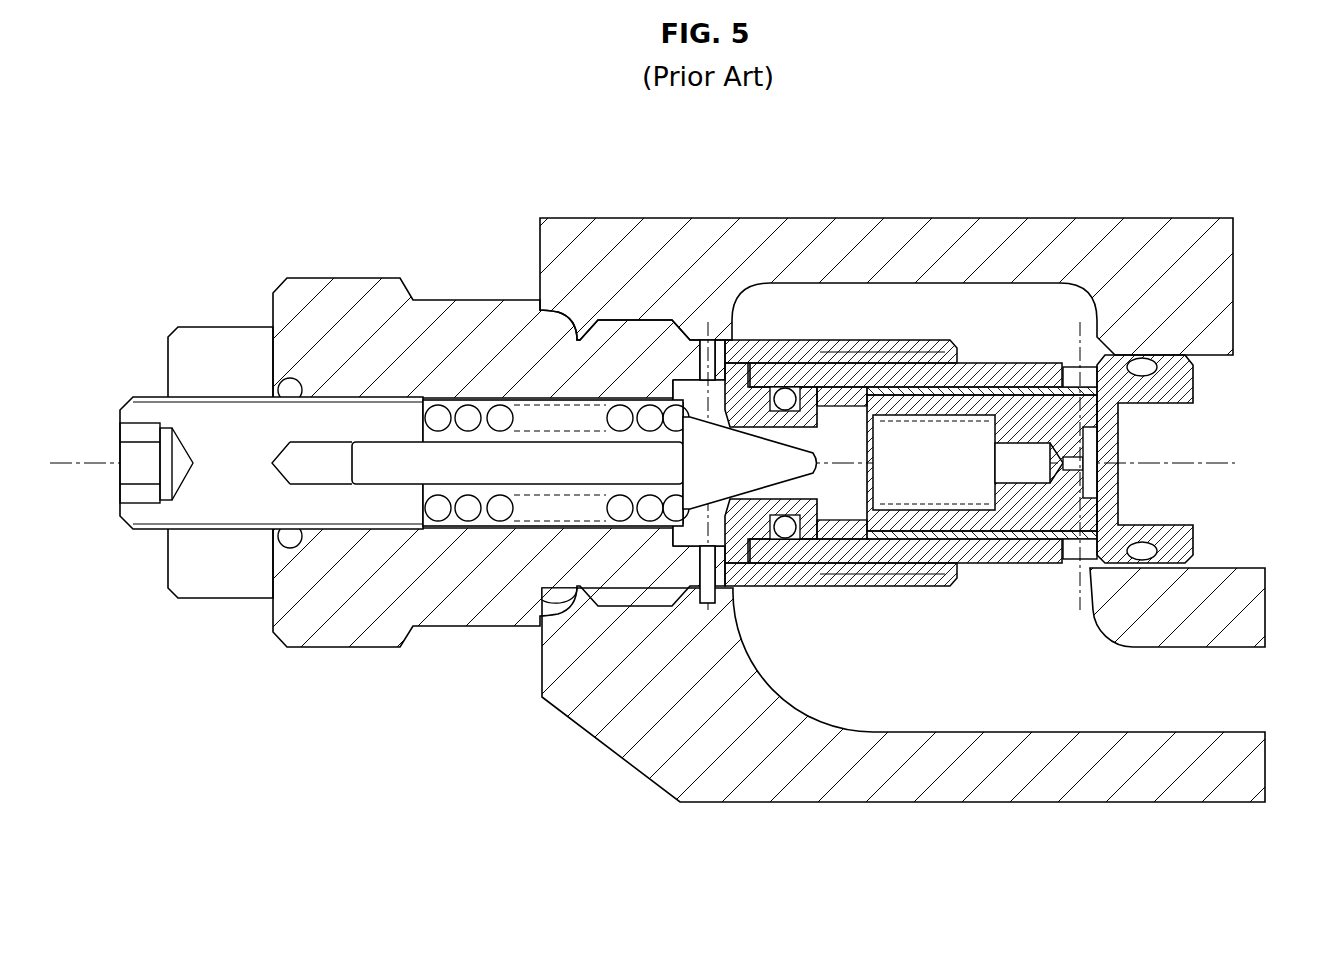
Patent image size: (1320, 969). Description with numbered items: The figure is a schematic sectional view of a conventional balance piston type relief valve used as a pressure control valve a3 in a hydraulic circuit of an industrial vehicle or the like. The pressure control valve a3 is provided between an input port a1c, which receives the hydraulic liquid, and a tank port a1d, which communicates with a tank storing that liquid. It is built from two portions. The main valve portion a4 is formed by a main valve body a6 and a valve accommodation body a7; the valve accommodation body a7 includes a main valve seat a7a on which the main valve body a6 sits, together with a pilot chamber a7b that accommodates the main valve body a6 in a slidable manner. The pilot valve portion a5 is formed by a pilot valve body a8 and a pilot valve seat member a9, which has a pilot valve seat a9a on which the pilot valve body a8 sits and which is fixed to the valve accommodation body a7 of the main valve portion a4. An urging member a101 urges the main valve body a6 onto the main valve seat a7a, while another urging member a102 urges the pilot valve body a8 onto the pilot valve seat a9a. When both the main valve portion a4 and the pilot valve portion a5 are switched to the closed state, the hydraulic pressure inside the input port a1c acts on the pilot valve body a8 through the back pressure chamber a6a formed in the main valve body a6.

The input port a1c is at (1203, 378).
The tank port a1d is at (1085, 705).
The pressure control valve a3 is at (1205, 427).
The main valve portion a4 is at (1018, 572).
The pilot valve portion a5 is at (712, 412).
The main valve body a6 is at (1032, 387).
The back pressure chamber a6a is at (902, 486).
The valve accommodation body a7 is at (965, 572).
The main valve seat a7a is at (1082, 587).
The pilot chamber a7b is at (848, 528).
The pilot valve body a8 is at (760, 457).
The pilot valve seat member a9 is at (740, 370).
The pilot valve seat a9a is at (705, 600).
The urging member a101 is at (979, 401).
The urging member a102 is at (468, 514).